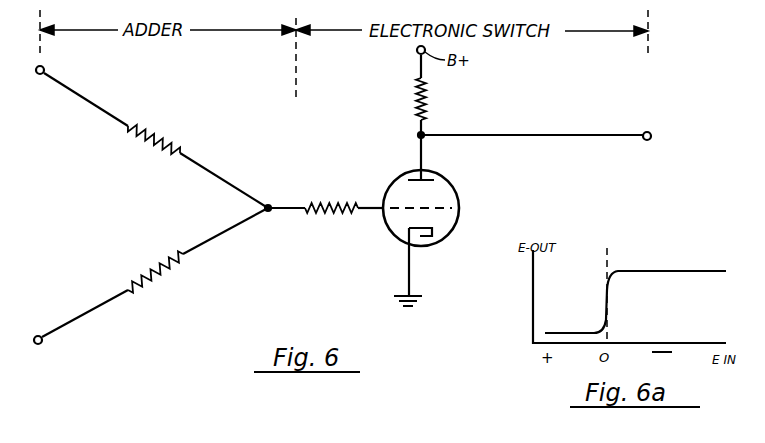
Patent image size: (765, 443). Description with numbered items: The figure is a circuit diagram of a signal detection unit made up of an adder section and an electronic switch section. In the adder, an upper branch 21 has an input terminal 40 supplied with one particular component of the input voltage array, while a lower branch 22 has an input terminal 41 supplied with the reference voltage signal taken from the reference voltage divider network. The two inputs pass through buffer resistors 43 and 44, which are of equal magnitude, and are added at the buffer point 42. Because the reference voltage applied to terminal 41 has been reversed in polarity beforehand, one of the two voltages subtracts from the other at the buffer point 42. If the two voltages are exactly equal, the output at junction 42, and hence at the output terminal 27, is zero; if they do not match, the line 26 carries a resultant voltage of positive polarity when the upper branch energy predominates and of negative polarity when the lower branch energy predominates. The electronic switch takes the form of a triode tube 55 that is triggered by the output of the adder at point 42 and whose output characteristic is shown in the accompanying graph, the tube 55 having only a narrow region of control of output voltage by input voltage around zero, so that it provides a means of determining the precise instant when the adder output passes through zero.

The input terminal 40 is at (44, 70).
The branch 21 is at (86, 99).
The buffer resistor 43 is at (152, 134).
The buffer point 42 is at (270, 206).
The buffer resistor 44 is at (153, 277).
The branch 22 is at (86, 314).
The input terminal 41 is at (38, 336).
The line 26 is at (492, 135).
The output terminal 27 is at (651, 134).
The triode tube 55 is at (459, 200).